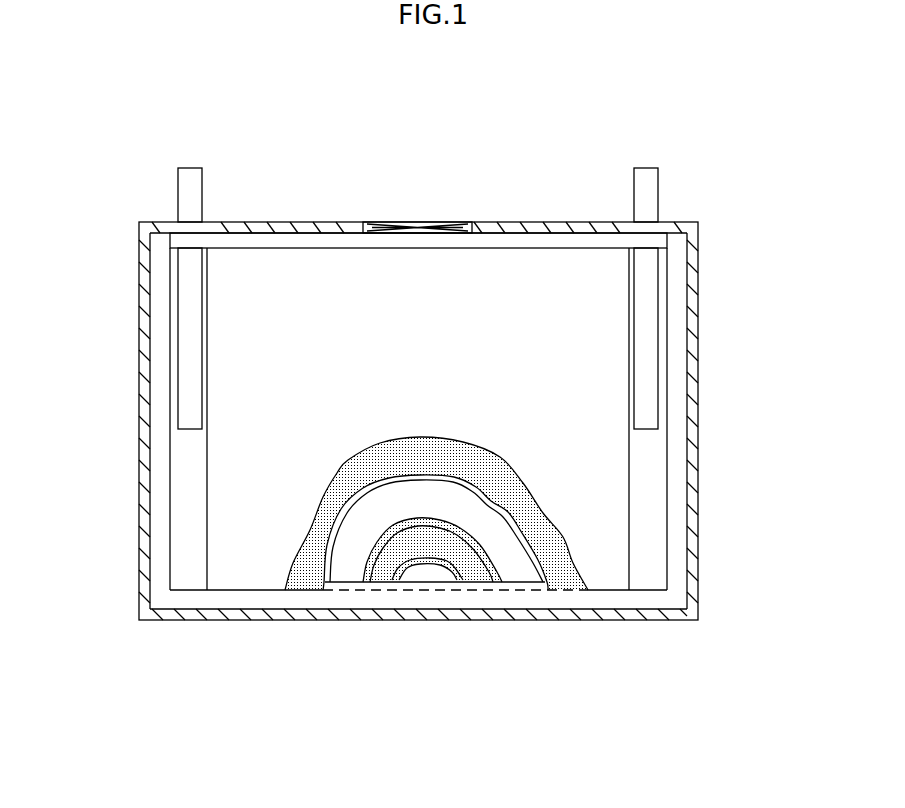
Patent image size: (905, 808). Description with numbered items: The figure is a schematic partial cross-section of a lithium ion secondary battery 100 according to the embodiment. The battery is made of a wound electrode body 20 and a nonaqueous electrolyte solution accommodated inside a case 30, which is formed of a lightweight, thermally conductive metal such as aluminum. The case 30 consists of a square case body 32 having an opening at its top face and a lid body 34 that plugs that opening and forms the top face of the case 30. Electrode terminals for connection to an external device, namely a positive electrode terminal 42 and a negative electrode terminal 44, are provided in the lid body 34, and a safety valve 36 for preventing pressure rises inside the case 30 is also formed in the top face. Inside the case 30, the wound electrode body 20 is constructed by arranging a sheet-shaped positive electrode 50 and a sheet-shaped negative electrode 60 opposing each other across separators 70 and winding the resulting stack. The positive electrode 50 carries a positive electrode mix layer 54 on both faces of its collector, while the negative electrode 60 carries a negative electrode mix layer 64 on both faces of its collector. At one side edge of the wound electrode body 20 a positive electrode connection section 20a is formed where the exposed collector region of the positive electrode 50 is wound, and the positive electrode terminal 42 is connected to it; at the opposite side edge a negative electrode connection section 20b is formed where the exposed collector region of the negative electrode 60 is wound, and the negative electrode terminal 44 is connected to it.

The lithium ion secondary battery 100 is at (699, 187).
The wound electrode body 20 is at (303, 281).
The positive electrode connection section 20a is at (185, 563).
The negative electrode connection section 20b is at (653, 489).
The case 30 is at (699, 333).
The case body 32 is at (698, 427).
The lid body 34 is at (522, 227).
The safety valve 36 is at (417, 223).
The positive electrode terminal 42 is at (190, 176).
The negative electrode terminal 44 is at (648, 176).
The positive electrode 50 is at (305, 575).
The positive electrode mix layer 54 is at (391, 609).
The negative electrode 60 is at (381, 570).
The negative electrode mix layer 64 is at (426, 632).
The separator 70 is at (245, 522).